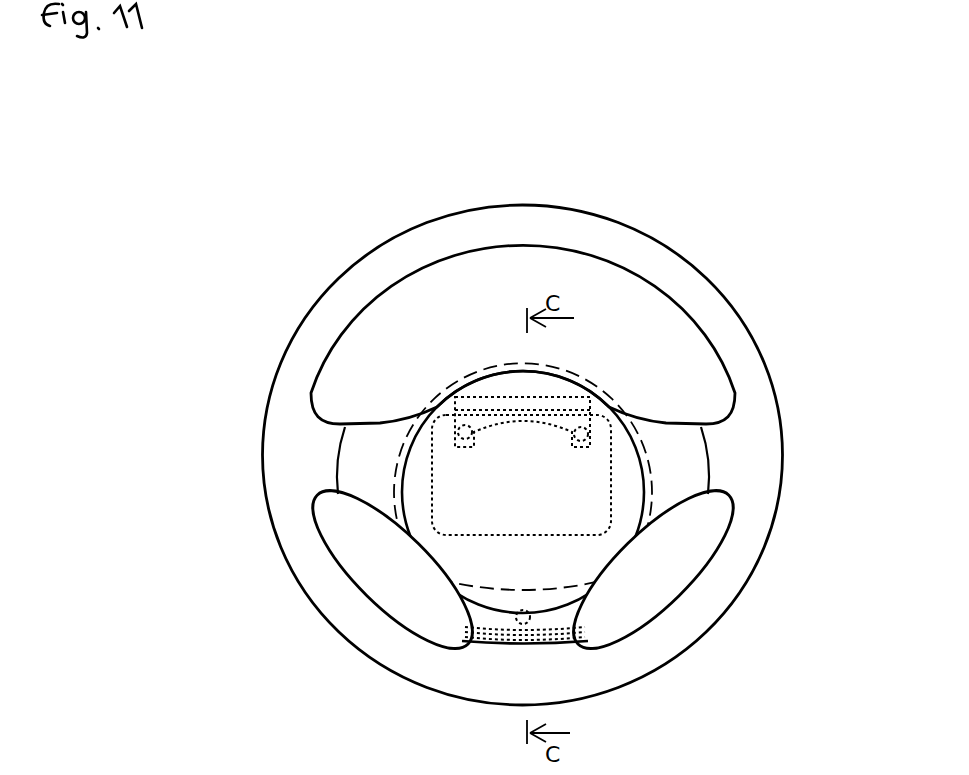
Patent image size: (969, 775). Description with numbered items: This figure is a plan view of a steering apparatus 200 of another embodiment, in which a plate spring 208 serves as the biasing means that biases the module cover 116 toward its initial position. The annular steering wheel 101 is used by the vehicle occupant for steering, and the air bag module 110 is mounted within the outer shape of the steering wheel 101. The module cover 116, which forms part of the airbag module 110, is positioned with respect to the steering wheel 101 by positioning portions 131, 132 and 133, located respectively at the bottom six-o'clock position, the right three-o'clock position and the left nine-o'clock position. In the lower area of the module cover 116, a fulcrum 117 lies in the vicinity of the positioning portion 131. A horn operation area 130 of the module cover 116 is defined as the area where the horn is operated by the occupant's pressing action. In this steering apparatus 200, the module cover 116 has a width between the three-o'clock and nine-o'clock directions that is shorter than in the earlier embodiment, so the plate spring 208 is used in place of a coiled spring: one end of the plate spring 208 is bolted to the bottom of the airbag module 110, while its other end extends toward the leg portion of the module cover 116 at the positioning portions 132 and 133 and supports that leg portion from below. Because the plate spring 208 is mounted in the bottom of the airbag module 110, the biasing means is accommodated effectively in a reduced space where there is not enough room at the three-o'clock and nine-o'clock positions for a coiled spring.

The steering apparatus 200 is at (546, 411).
The steering wheel 101 is at (735, 318).
The air bag module 110 is at (667, 512).
The module cover 116 is at (570, 558).
The fulcrum 117 is at (560, 643).
The horn operation area 130 is at (478, 368).
The positioning portion 131 is at (517, 623).
The positioning portion 132 is at (586, 428).
The positioning portion 133 is at (458, 430).
The plate spring 208 is at (537, 403).